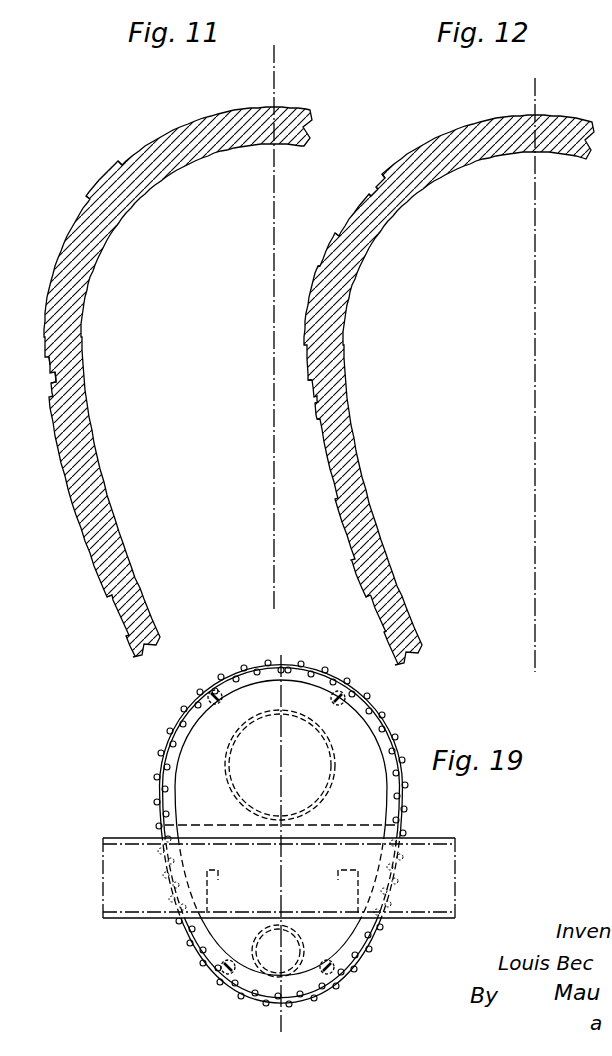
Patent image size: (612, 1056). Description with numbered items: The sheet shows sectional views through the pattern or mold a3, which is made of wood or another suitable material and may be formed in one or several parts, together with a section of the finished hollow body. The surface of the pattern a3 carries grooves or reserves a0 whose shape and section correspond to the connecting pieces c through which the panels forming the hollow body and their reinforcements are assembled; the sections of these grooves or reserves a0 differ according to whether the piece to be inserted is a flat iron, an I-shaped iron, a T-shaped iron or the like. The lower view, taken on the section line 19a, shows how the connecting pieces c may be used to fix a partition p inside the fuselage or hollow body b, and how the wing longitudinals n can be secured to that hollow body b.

In FIG. 11, the grooves or reserves a0 is at (110, 183).
In FIG. 12, the grooves or reserves a0 is at (363, 193).
In FIG. 11, the pattern or mold a3 is at (67, 300).
In FIG. 12, the pattern or mold a3 is at (335, 333).
In FIG. 19, the fuselage or hollow body b is at (158, 800).
In FIG. 19, the connecting pieces c is at (270, 679).
In FIG. 19, the partition p is at (353, 730).
In FIG. 19, the wing longitudinals n is at (132, 900).
In FIG. 19, the section line 19a- 19a is at (258, 839).